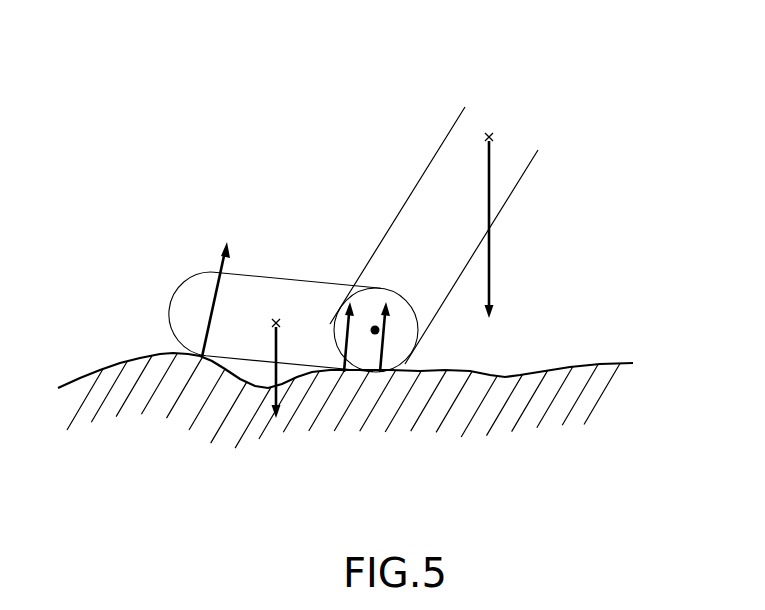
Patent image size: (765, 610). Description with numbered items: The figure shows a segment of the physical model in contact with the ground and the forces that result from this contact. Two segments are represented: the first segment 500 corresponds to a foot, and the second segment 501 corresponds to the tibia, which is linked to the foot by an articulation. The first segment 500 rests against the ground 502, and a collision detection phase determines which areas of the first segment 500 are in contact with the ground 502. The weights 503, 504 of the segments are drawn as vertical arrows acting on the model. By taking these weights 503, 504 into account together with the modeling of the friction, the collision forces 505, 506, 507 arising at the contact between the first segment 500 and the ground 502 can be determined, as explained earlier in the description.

The first segment 500 is at (425, 338).
The second segment 501 is at (427, 168).
The ground 502 is at (113, 380).
The weight 503 is at (265, 420).
The weight 504 is at (489, 262).
The collision force 505 is at (219, 262).
The collision force 506 is at (348, 348).
The collision force 507 is at (385, 340).